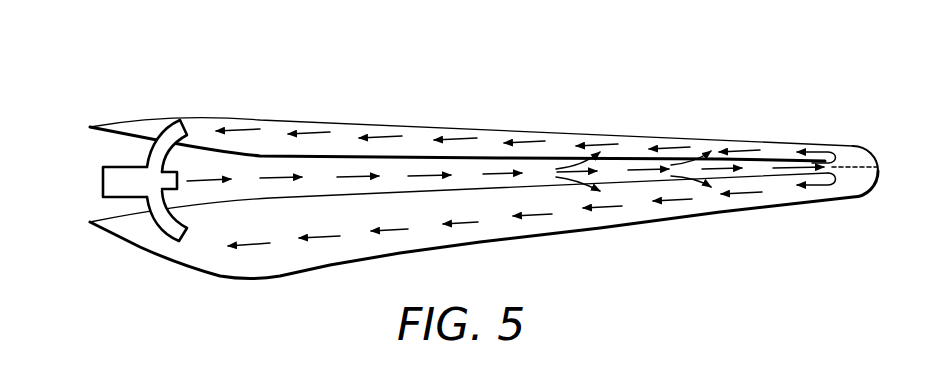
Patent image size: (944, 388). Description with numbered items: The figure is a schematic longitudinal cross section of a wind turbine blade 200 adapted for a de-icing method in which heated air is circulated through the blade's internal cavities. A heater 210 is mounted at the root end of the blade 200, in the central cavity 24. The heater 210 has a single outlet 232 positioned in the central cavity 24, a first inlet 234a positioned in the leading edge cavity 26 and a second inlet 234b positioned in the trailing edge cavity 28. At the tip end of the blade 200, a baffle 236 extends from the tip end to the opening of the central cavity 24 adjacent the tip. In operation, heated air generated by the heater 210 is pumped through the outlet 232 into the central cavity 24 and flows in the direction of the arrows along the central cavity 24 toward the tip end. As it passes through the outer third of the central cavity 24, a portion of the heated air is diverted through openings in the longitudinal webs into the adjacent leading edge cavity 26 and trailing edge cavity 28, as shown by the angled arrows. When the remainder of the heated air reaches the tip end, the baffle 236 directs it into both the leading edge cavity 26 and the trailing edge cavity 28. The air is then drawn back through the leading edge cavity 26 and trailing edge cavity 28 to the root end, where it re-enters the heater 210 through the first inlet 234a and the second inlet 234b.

The blade 200 is at (459, 191).
The central cavity 24 is at (498, 183).
The leading edge cavity 26 is at (420, 130).
The trailing edge cavity 28 is at (635, 216).
The heater 210 is at (107, 183).
The outlet 232 is at (177, 185).
The first inlet 234a is at (185, 128).
The second inlet 234b is at (184, 240).
The baffle 236 is at (857, 169).